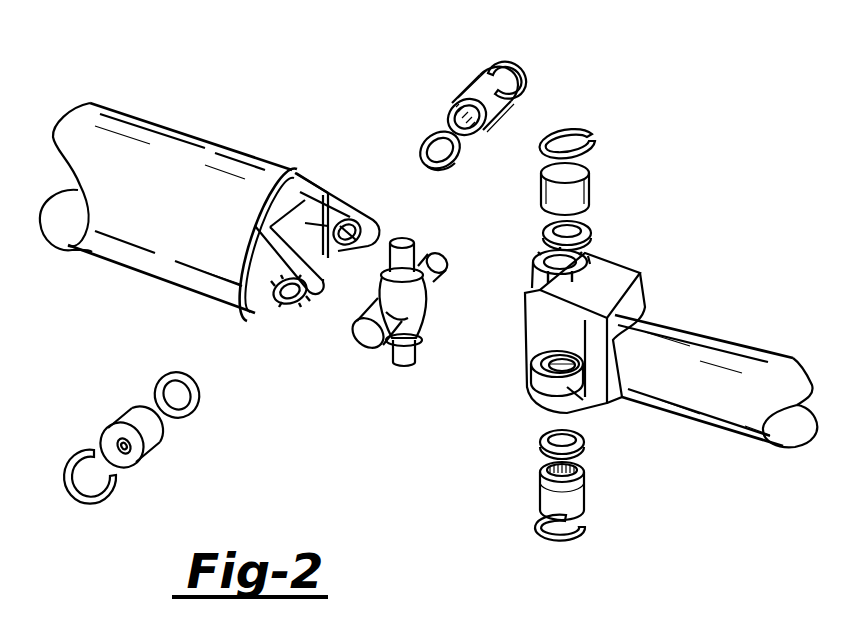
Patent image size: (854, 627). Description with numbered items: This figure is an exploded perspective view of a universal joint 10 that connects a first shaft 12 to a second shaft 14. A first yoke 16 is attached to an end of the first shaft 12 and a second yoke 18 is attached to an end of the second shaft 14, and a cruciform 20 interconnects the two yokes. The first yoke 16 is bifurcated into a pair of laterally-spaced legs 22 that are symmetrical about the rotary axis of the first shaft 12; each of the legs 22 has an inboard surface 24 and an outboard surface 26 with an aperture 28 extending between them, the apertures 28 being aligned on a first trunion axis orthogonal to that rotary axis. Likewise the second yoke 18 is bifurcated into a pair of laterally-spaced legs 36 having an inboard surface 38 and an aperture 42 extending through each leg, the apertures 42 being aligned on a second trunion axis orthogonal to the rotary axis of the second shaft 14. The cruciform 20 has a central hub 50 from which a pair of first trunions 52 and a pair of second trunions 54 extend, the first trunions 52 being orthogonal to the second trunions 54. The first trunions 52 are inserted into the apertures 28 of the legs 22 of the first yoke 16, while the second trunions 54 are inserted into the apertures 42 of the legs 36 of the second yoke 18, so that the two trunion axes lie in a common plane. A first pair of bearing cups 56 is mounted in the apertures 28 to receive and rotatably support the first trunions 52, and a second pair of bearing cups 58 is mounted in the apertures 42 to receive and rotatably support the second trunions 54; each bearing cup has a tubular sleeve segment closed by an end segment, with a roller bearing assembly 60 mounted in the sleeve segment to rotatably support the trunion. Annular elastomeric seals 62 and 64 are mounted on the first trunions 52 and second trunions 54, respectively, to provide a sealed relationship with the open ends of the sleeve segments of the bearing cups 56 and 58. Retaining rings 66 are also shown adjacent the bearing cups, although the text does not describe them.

The universal joint 10 is at (641, 96).
The first shaft 12 is at (712, 328).
The second shaft 14 is at (190, 141).
The first yoke 16 is at (586, 305).
The second yoke 18 is at (293, 218).
The cruciform 20 is at (405, 293).
The legs 22 is at (530, 288).
The inboard surface 24 is at (577, 353).
The outboard surface 26 is at (587, 253).
The aperture 28 is at (547, 257).
The legs 36 is at (333, 185).
The inboard surface 38 is at (370, 252).
The aperture 42 is at (362, 226).
The central hub 50 is at (418, 296).
The first trunions 52 is at (408, 248).
The second trunions 54 is at (442, 266).
The first bearing cups 56 is at (594, 165).
The second bearing cups 58 is at (476, 86).
The roller bearing assembly 60 is at (470, 138).
The annular elastomeric seal 62 is at (592, 228).
The annular elastomeric seal 64 is at (424, 128).
The retaining ring 66 is at (512, 62).